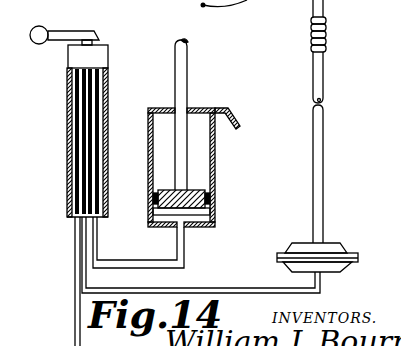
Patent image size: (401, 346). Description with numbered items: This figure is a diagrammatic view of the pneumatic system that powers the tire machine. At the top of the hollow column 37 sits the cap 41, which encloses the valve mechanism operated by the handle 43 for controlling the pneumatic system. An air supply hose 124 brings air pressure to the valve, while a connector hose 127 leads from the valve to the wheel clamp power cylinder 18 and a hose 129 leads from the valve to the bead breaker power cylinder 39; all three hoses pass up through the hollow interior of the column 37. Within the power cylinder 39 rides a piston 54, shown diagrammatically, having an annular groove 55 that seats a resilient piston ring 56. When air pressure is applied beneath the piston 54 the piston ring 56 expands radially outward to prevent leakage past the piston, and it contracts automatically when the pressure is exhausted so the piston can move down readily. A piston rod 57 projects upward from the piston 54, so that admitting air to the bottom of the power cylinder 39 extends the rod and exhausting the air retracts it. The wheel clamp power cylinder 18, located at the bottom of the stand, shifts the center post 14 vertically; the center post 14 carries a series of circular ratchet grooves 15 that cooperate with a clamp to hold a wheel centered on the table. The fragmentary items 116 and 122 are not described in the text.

The center post 14 is at (318, 123).
The circular ratchet grooves 15 is at (327, 43).
The power cylinder 18 is at (341, 252).
The column 37 is at (109, 89).
The power cylinder 39 is at (215, 158).
The cap 41 is at (78, 61).
The handle 43 is at (66, 33).
The piston 54 is at (194, 190).
The annular groove 55 is at (207, 200).
The piston ring 56 is at (156, 199).
The piston rod 57 is at (188, 68).
The conduit 116 is at (179, 8).
The conduit 122 is at (10, 148).
The air supply hose 124 is at (75, 262).
The connector hose 127 is at (255, 288).
The hose 129 is at (153, 260).